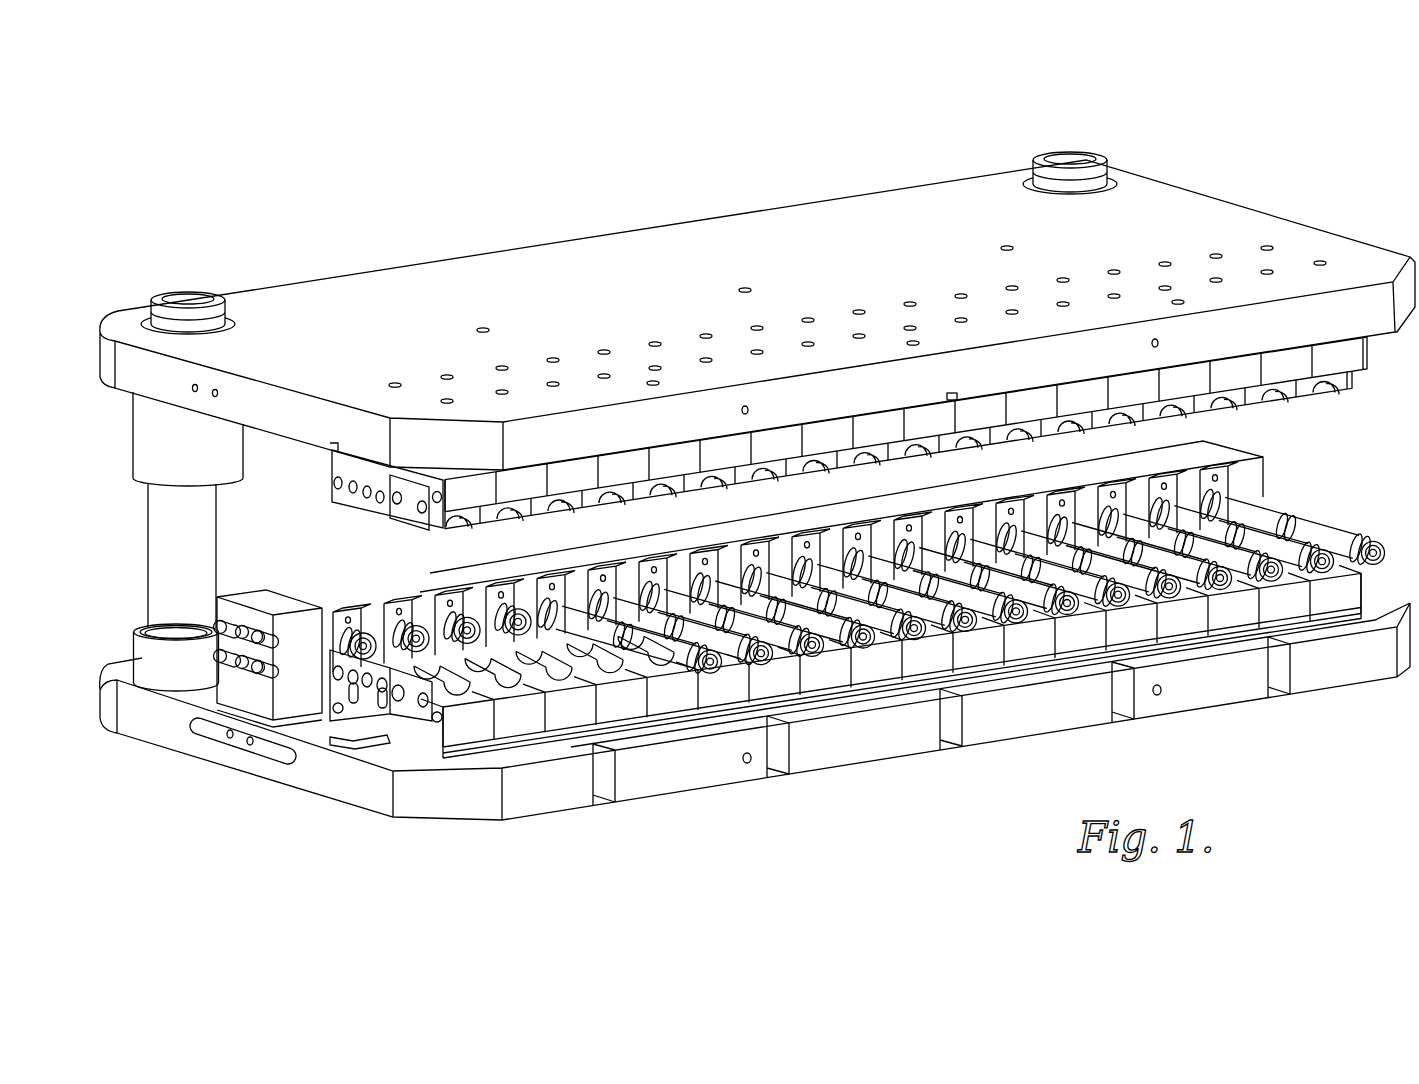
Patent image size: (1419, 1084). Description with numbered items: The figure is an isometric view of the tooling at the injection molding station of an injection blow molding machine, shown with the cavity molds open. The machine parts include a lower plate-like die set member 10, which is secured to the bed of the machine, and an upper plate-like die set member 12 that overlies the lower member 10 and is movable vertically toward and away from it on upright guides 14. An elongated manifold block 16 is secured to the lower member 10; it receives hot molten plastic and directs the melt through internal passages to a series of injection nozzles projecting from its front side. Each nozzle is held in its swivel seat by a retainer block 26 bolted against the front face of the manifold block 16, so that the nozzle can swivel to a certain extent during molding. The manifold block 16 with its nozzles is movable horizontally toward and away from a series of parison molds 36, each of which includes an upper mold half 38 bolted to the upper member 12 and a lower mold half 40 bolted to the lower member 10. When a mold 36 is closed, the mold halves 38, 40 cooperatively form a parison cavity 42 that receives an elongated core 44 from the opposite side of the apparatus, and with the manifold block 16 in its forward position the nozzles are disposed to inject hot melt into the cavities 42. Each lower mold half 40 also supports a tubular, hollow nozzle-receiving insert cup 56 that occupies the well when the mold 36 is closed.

The lower plate-like die set member 10 is at (163, 727).
The upper plate-like die set member 12 is at (477, 273).
The upright guides 14 is at (187, 297).
The manifold block 16 is at (297, 663).
The retainer block 26 is at (340, 629).
The parison molds 36 is at (350, 522).
The upper mold half 38 is at (352, 464).
The lower mold half 40 is at (420, 733).
The parison cavity 42 is at (405, 658).
The elongated core 44 is at (588, 600).
The nozzle-receiving insert cup 56 is at (360, 645).